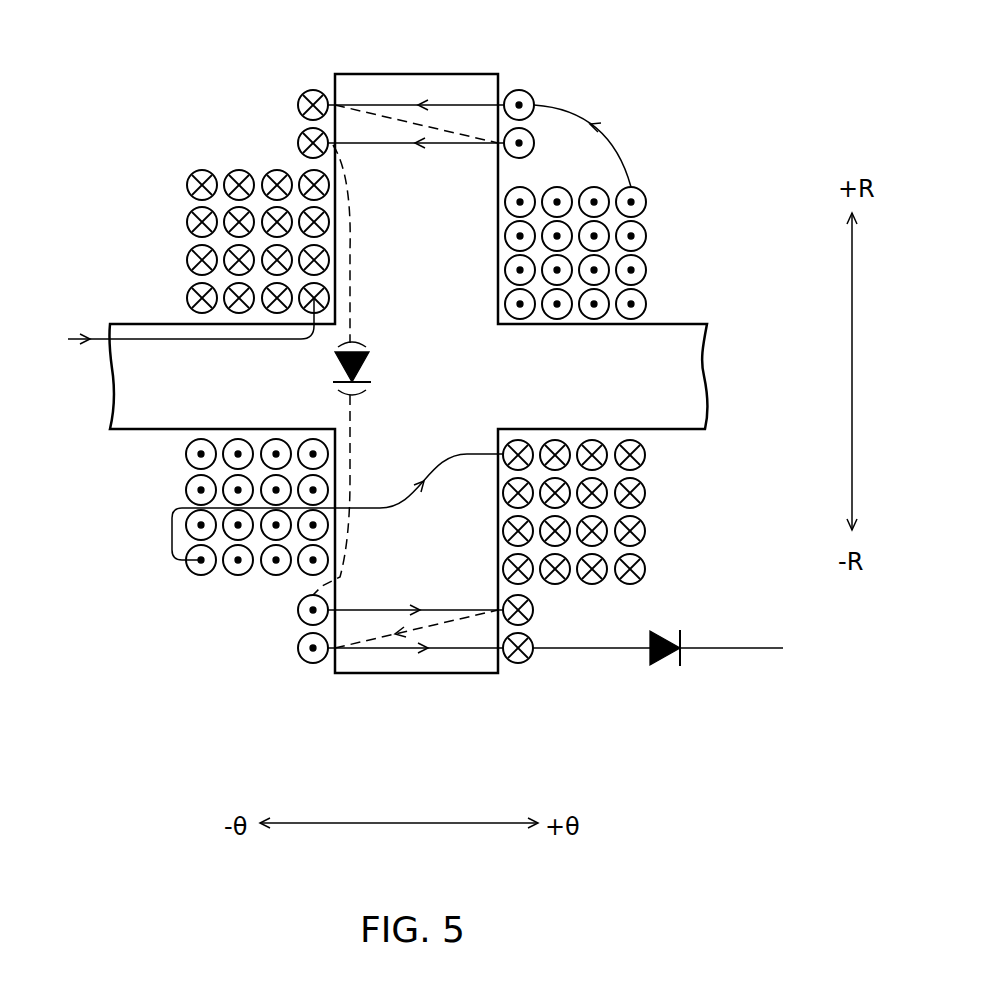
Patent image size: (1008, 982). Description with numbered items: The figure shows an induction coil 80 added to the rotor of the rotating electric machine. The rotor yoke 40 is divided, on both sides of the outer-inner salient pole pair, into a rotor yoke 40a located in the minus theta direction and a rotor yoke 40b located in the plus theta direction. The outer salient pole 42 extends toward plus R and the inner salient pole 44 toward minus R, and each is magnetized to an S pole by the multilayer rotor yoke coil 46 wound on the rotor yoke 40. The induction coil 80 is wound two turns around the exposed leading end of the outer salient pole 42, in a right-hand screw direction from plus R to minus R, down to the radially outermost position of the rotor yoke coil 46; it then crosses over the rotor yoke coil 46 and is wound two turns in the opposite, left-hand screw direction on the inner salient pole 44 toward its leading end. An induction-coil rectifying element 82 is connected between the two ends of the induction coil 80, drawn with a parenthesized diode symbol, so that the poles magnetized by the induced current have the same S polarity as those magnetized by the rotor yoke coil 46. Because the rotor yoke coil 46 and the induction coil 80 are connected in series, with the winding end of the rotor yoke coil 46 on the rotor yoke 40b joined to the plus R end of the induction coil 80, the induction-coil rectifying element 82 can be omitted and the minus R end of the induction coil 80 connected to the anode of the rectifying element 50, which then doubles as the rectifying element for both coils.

The rotor yoke 40 is at (685, 392).
The rotor yoke on one side 40a is at (172, 382).
The rotor yoke on the other side 40b is at (567, 382).
The outer salient pole 42 is at (400, 83).
The inner salient pole 44 is at (395, 680).
The rotor yoke coil 46 is at (655, 595).
The induction coil 80 is at (547, 88).
The induction-coil rectifying element 82 is at (378, 372).
The rectifying element 50 is at (655, 680).